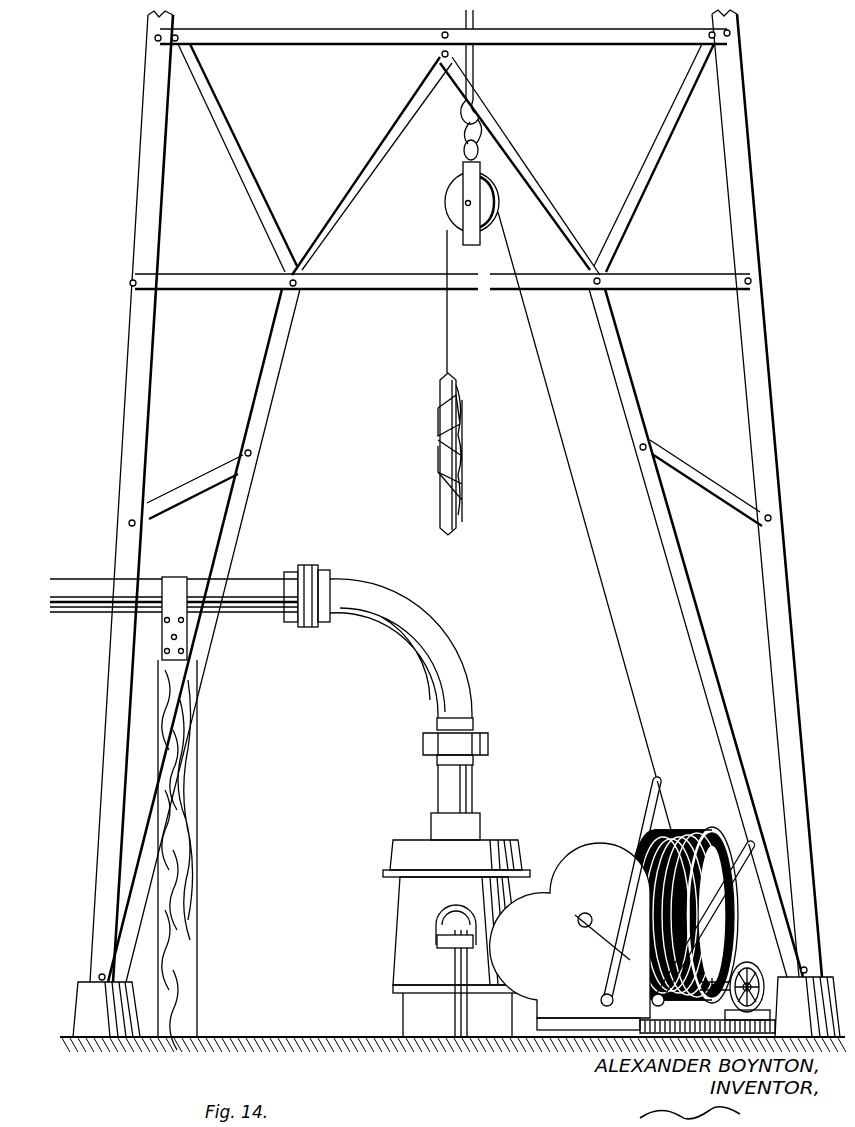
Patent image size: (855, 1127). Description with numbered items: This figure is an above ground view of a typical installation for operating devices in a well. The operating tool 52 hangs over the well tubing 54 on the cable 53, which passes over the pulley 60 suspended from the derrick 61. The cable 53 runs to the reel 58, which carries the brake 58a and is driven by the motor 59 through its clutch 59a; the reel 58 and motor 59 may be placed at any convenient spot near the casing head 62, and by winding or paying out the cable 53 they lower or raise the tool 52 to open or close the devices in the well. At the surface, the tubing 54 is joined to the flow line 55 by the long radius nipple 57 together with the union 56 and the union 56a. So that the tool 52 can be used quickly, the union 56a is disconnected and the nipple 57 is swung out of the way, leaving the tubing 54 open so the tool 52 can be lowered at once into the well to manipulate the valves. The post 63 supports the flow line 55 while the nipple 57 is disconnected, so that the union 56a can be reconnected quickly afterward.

The operating tool 52 is at (443, 428).
The cable 53 is at (580, 522).
The well tubing 54 is at (472, 793).
The flow line 55 is at (258, 585).
The union 56 is at (315, 572).
The union 56a is at (428, 747).
The long radius nipple 57 is at (428, 620).
The reel 58 is at (632, 930).
The brake 58a is at (650, 812).
The motor 59 is at (745, 962).
The clutch 59a is at (742, 840).
The pulley 60 is at (453, 198).
The derrick 61 is at (748, 340).
The casing head 62 is at (413, 915).
The post 63 is at (180, 818).